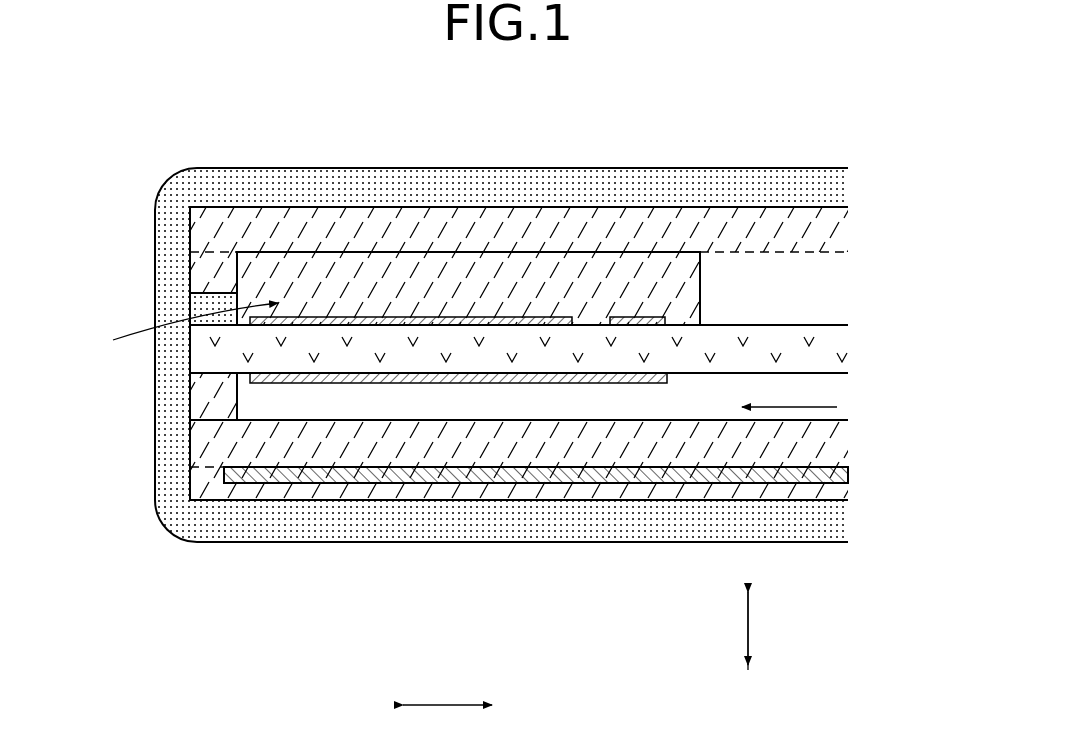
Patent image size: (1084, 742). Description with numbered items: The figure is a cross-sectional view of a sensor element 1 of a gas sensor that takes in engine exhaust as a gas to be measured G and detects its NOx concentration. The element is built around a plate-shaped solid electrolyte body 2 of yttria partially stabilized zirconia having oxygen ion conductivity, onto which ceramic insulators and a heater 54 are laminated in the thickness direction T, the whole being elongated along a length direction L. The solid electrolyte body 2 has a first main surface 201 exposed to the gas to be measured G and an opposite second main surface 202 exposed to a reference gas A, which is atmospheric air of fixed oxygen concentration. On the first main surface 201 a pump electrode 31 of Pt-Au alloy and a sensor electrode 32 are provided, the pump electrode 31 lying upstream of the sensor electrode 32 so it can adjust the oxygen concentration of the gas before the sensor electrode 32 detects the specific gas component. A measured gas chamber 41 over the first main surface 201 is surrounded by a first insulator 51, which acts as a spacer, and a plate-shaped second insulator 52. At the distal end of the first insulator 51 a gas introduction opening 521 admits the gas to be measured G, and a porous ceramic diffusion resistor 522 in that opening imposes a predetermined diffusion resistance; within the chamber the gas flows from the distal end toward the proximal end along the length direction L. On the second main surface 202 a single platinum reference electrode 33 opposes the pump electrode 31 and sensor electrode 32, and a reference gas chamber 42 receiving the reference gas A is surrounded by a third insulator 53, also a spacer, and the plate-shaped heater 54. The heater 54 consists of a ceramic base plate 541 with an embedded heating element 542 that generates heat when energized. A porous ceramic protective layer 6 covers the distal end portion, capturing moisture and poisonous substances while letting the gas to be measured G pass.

The sensor element 1 is at (511, 399).
The solid electrolyte body 2 is at (338, 355).
The protective layer 6 is at (327, 192).
The pump electrode 31 is at (427, 317).
The sensor electrode 32 is at (640, 323).
The reference electrode 33 is at (415, 385).
The measured gas chamber 41 is at (527, 300).
The reference gas chamber 42 is at (493, 398).
The first insulator 51 is at (775, 285).
The second insulator 52 is at (471, 200).
The gas introduction opening 521 is at (190, 298).
The diffusion resistor 522 is at (214, 300).
The third insulator 53 is at (215, 403).
The heater 54 is at (519, 541).
The base plate 541 is at (582, 450).
The heating element 542 is at (510, 610).
The first main surface 201 is at (772, 325).
The second main surface 202 is at (777, 373).
The gas to be measured G is at (128, 332).
The reference gas A is at (797, 407).
The thickness direction T is at (766, 628).
The length direction L is at (448, 696).